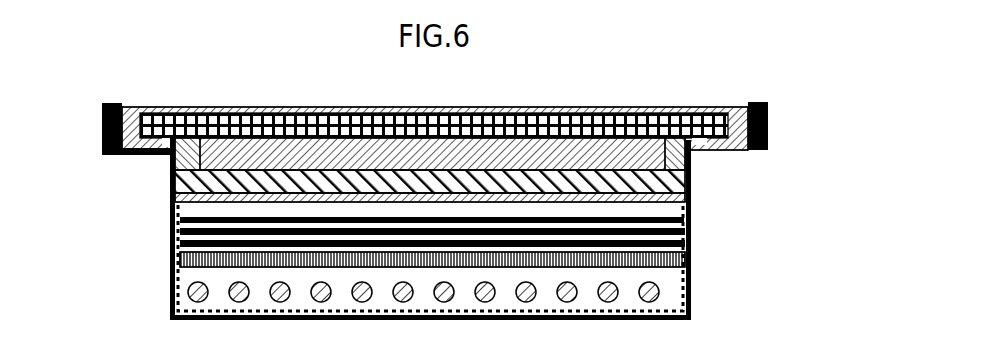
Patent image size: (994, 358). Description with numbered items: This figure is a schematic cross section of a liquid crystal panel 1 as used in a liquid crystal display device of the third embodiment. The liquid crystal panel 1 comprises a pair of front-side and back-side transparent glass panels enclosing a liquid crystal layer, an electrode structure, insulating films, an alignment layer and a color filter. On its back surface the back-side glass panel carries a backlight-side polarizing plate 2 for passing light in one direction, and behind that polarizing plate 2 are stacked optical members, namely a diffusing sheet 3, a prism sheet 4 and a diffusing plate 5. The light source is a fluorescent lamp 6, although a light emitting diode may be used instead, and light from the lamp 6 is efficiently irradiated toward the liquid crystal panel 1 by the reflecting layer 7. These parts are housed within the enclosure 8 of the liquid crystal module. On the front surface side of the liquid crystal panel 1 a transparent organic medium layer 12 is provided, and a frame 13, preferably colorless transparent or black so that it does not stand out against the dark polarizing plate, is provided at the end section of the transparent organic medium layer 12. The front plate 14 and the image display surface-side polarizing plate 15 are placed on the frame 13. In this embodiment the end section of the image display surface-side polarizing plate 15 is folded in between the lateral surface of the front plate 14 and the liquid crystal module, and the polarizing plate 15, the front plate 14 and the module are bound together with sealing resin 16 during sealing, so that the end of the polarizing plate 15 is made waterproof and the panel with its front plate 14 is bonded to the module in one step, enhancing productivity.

The liquid crystal panel 1 is at (170, 181).
The backlight-side polarizing plate 2 is at (170, 198).
The diffusing sheet 3 is at (658, 217).
The prism sheet 4 is at (688, 229).
The diffusing plate 5 is at (690, 263).
The fluorescent lamp 6 is at (660, 297).
The reflecting layer 7 is at (190, 308).
The enclosure of the liquid crystal module 8 is at (442, 220).
The transparent organic medium layer 12 is at (247, 152).
The frame 13 is at (140, 110).
The front plate 14 is at (367, 123).
The image display surface-side polarizing plate 15 is at (497, 108).
The sealing resin 16 is at (747, 103).